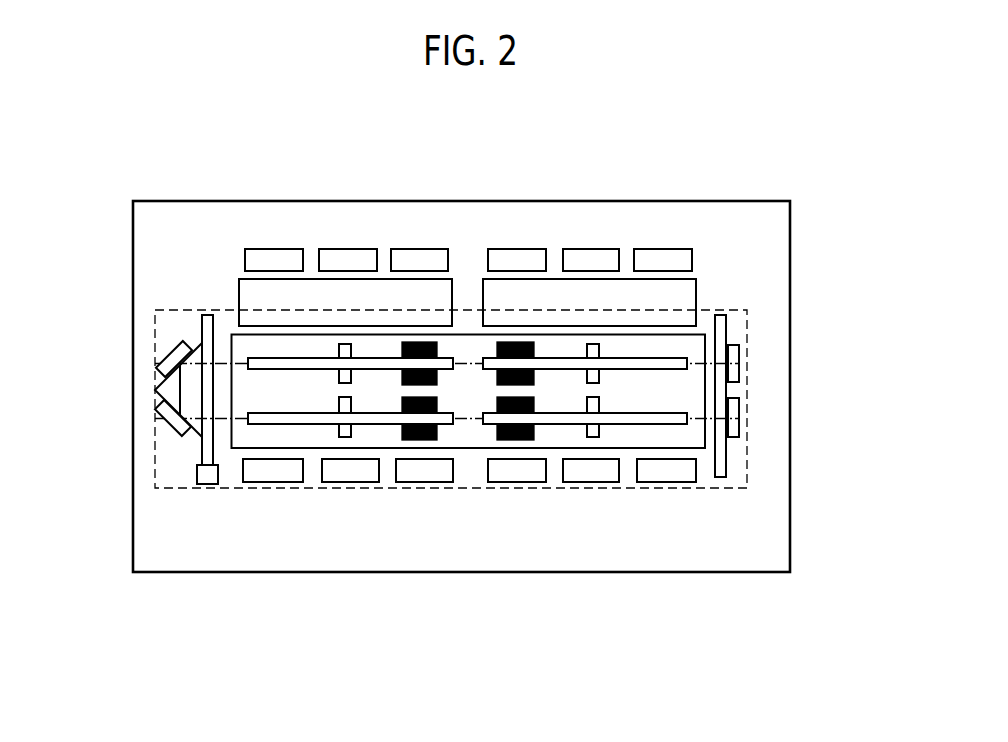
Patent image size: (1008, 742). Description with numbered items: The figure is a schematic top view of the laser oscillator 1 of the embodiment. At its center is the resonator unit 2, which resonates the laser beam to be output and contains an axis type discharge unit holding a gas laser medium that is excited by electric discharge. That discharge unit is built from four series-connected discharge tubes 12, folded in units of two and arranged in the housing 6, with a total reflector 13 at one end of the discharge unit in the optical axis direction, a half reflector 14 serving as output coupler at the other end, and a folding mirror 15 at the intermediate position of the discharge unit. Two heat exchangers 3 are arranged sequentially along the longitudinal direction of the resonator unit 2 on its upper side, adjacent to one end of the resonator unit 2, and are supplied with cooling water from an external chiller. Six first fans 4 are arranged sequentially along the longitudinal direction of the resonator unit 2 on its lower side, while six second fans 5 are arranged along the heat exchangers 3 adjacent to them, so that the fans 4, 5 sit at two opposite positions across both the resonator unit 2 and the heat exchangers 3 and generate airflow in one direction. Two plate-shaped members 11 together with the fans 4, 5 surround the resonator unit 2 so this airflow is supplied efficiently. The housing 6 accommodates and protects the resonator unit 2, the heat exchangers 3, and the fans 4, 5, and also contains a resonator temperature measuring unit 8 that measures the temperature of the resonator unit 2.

The laser oscillator 1 is at (158, 152).
The resonator unit 2 is at (466, 343).
The heat exchangers 3 is at (239, 291).
The first fans 4 is at (417, 470).
The second fans 5 is at (415, 260).
The housing 6 is at (789, 220).
The resonator temperature measuring unit 8 is at (212, 485).
The plate-shaped members 11 is at (467, 490).
The discharge tubes 12 is at (686, 360).
The total reflector 13 is at (737, 352).
The half reflector 14 is at (737, 405).
The folding mirror 15 is at (166, 365).